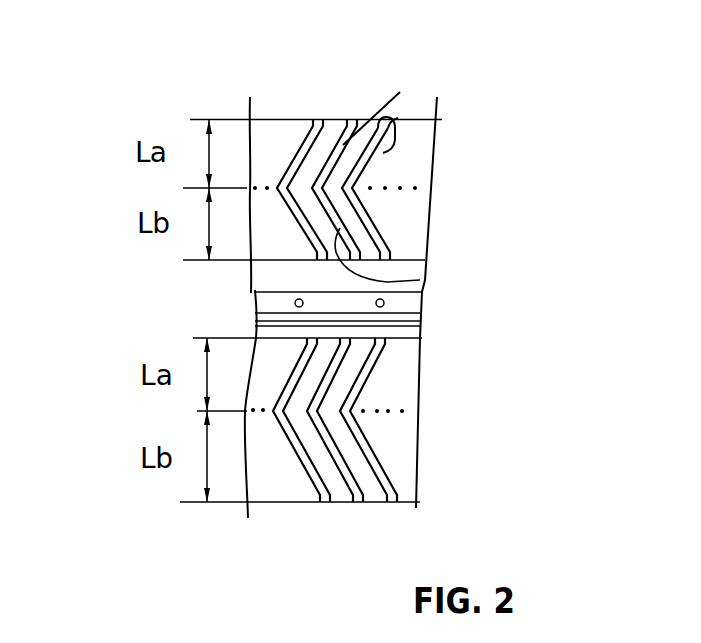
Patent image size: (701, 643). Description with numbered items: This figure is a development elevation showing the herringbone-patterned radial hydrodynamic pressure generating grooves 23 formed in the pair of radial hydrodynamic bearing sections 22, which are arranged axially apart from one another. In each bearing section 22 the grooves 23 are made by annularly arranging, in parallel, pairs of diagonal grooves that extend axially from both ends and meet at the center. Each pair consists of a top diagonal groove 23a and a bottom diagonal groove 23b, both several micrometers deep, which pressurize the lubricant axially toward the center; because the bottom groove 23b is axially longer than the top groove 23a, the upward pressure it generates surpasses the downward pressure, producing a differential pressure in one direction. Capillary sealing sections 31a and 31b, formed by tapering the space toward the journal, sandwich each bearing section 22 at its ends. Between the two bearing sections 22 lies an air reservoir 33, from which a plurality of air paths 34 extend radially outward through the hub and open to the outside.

The radial hydrodynamic bearing section 22 is at (422, 155).
The radial hydrodynamic pressure generating groove 23 is at (370, 163).
The top diagonal groove 23a is at (393, 140).
The bottom diagonal groove 23b is at (363, 217).
The capillary sealing section 31a is at (354, 95).
The capillary sealing section 31b is at (268, 276).
The air reservoir 33 is at (410, 303).
The air path 34 is at (295, 303).